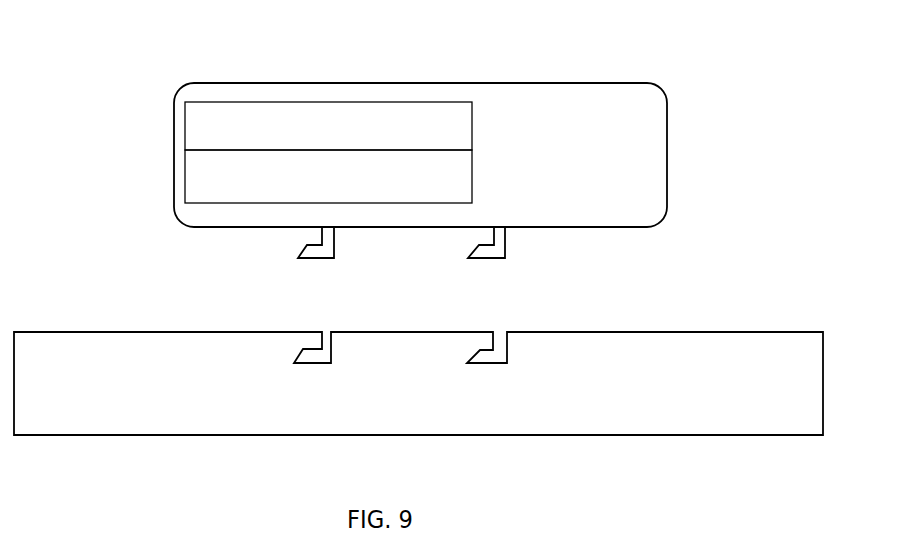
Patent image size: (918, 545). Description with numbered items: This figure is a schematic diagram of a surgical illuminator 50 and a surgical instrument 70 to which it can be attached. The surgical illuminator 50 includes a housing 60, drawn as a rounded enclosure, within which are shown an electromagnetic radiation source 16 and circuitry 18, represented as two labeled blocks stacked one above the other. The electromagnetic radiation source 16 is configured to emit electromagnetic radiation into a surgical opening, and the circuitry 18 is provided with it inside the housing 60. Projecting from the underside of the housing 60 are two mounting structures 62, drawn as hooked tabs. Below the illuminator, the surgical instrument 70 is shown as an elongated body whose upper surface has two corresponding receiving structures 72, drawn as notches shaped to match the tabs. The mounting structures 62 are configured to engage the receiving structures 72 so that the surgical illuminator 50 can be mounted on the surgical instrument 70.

The surgical illuminator 50 is at (365, 136).
The housing 60 is at (520, 73).
The circuitry 18 is at (390, 141).
The electromagnetic radiation source 16 is at (417, 187).
The mounting structures 62 is at (458, 251).
The surgical instrument 70 is at (418, 358).
The receiving structures 72 is at (457, 360).